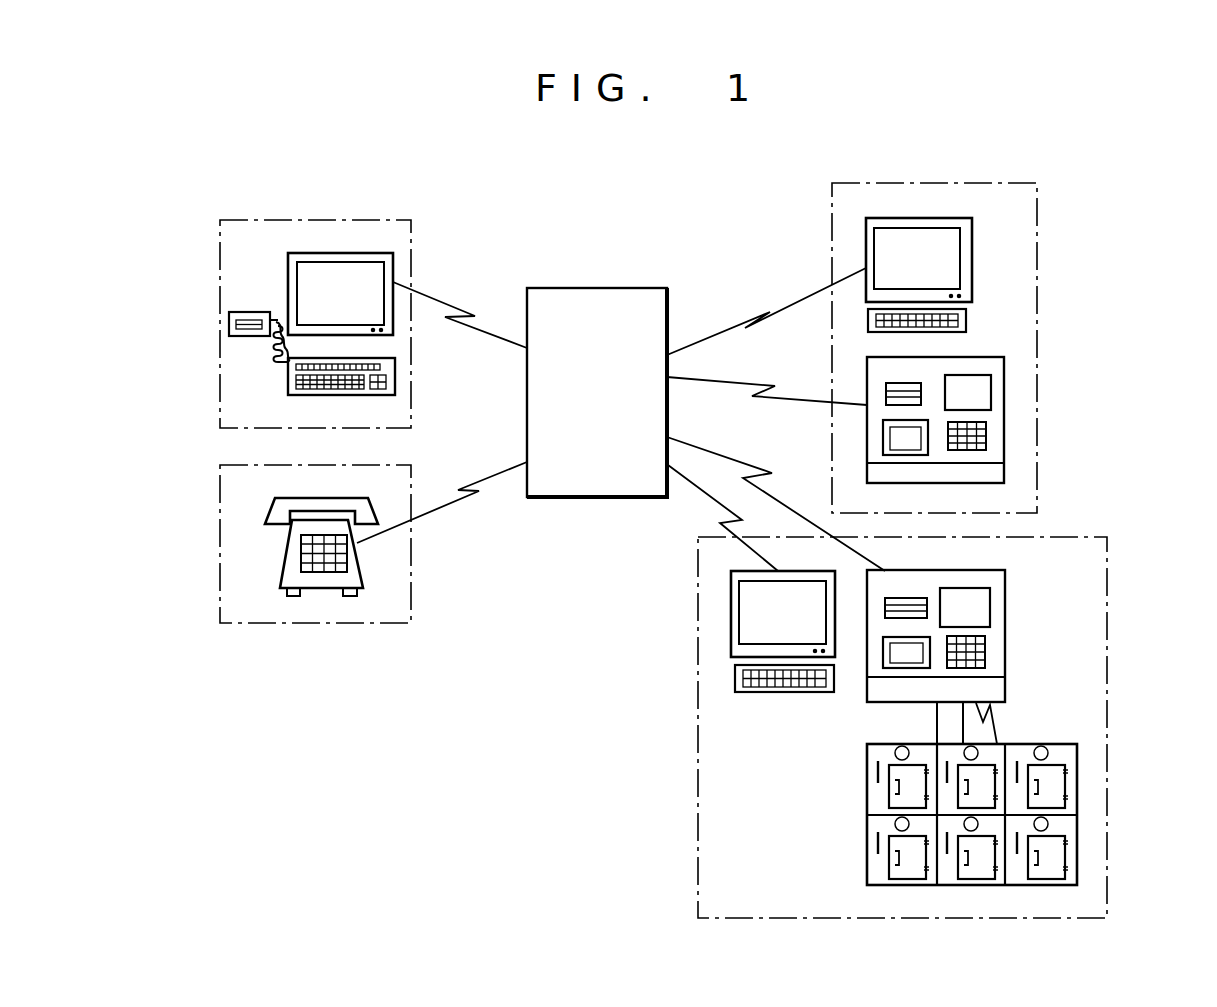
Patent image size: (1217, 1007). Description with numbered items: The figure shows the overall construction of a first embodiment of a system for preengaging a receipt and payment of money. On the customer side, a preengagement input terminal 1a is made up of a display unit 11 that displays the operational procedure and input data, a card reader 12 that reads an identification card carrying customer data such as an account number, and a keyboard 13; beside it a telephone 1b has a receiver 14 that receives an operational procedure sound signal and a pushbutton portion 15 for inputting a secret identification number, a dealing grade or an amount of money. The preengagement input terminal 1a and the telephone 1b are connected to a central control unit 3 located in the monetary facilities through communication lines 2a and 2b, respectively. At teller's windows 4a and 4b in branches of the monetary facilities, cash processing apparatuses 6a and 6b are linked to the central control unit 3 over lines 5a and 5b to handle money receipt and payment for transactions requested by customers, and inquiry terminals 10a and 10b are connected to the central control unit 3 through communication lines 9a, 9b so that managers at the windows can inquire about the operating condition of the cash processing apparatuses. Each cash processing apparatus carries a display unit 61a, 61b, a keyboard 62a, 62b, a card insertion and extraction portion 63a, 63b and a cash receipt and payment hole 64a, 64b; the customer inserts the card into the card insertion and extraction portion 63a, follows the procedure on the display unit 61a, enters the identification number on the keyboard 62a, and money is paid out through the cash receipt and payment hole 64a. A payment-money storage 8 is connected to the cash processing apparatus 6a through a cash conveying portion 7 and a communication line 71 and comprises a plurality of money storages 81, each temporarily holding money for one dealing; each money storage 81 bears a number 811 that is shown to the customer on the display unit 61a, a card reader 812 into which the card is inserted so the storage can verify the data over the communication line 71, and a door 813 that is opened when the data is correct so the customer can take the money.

The preengagement input terminal 1a is at (242, 215).
The telephone 1b is at (253, 622).
The display unit 11 is at (383, 255).
The card reader 12 is at (229, 324).
The keyboard 13 is at (295, 382).
The receiver 14 is at (263, 580).
The pushbutton portion 15 is at (340, 580).
The communication line 2a is at (457, 304).
The communication line 2b is at (464, 507).
The central control unit 3 is at (608, 288).
The teller's window 4a is at (1107, 762).
The teller's window 4b is at (1037, 197).
The communication line to terminal 6a 5a is at (797, 483).
The communication line to terminal 6b 5b is at (797, 398).
The cash processing apparatus 6a is at (977, 621).
The cash processing apparatus 6b is at (935, 403).
The display unit 61a is at (987, 590).
The display of terminal 61b is at (975, 375).
The keyboard 62a is at (985, 648).
The keypad of terminal 62b is at (986, 431).
The card insertion and extraction portion 63a is at (912, 598).
The card reader of terminal 63b is at (903, 383).
The cash receipt and payment hole 64a is at (930, 661).
The printer/receipt unit of terminal 64b is at (928, 450).
The cable 7 is at (937, 720).
The communication line 71 is at (990, 722).
The payment-money storage 8 is at (941, 797).
The money storage 81 is at (837, 779).
The number 811 is at (895, 750).
The card reader 812 is at (878, 770).
The locker door 813 is at (890, 796).
The communication line 9a is at (700, 494).
The communication line 9b is at (777, 308).
The inquiry terminal 10a is at (731, 608).
The inquiry terminal 10b is at (922, 218).